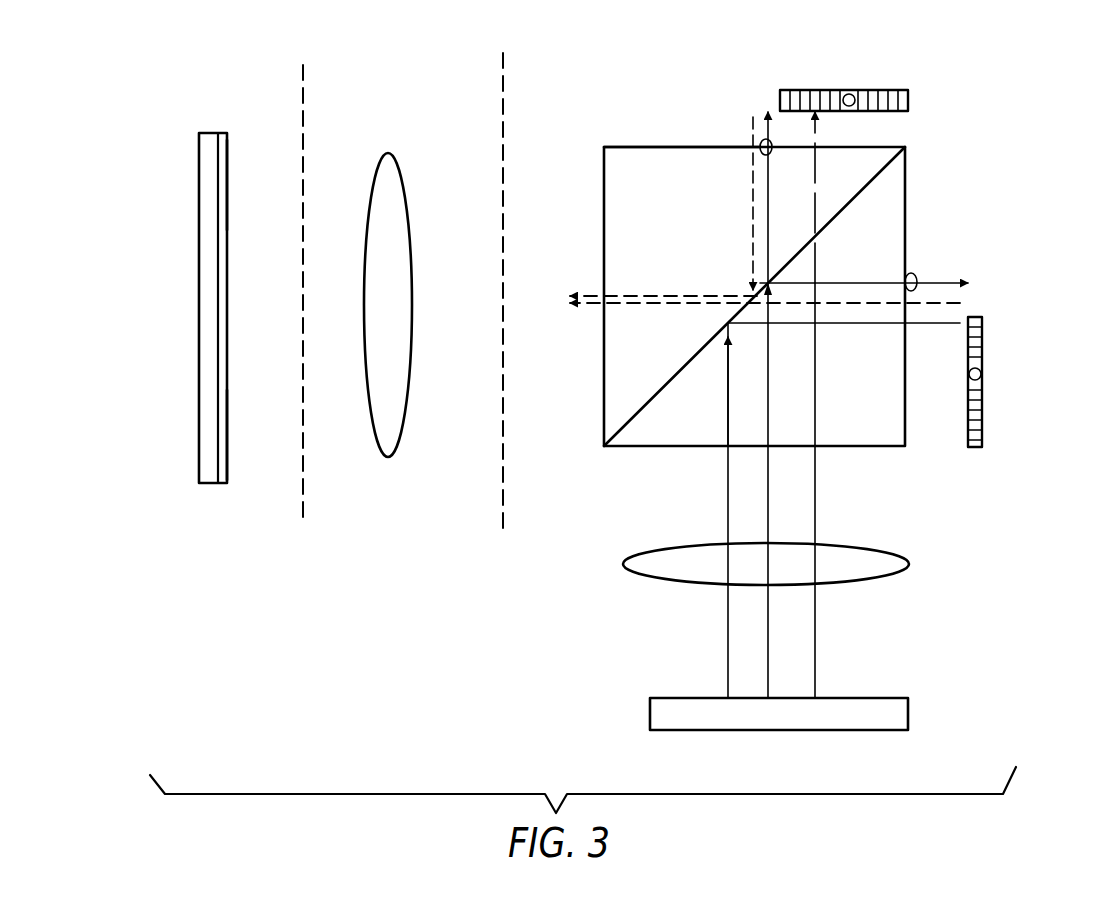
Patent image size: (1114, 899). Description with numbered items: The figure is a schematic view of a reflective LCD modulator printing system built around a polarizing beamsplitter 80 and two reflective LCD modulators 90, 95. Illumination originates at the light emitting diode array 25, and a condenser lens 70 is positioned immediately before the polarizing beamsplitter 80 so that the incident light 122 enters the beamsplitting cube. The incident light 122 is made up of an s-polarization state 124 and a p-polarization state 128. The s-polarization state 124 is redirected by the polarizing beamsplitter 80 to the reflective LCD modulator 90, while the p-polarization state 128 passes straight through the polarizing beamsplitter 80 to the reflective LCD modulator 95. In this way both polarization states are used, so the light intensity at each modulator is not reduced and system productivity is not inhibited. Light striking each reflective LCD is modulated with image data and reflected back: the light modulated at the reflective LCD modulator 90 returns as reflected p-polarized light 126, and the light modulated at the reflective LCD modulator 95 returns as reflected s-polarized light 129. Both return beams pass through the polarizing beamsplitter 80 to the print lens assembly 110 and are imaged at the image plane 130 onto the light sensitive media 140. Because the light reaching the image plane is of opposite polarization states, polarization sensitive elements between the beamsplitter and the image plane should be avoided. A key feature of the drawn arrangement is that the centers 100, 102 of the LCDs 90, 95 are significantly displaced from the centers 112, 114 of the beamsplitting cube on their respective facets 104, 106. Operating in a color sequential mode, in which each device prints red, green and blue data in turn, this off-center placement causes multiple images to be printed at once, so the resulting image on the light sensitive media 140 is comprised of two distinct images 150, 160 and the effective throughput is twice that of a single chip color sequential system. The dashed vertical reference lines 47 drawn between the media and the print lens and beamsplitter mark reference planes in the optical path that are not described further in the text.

The light emitting diode (LED) array 25 is at (910, 714).
The reference plane 47 is at (304, 143).
The condenser lens 70 is at (905, 548).
The polarizing beamsplitter 80 is at (907, 146).
The reflective LCD modulator 90 is at (983, 420).
The reflective LCD modulator 95 is at (802, 89).
The center of LCD 100 is at (983, 343).
The center of LCD 102 is at (861, 89).
The facet 104 is at (907, 355).
The facet 106 is at (650, 146).
The print lens assembly 110 is at (390, 457).
The center of beamsplitting cube 112 is at (913, 274).
The center of beamsplitting cube 114 is at (760, 140).
The incident light 122 is at (728, 516).
The s-polarization state 124 is at (870, 322).
The reflected p-polarized light 126 is at (695, 303).
The p-polarization state 128 is at (772, 228).
The reflected s-polarized light 129 is at (753, 212).
The image plane 130 is at (233, 126).
The light sensitive media 140 is at (229, 509).
The distinct image 150 is at (228, 443).
The distinct image 160 is at (228, 188).